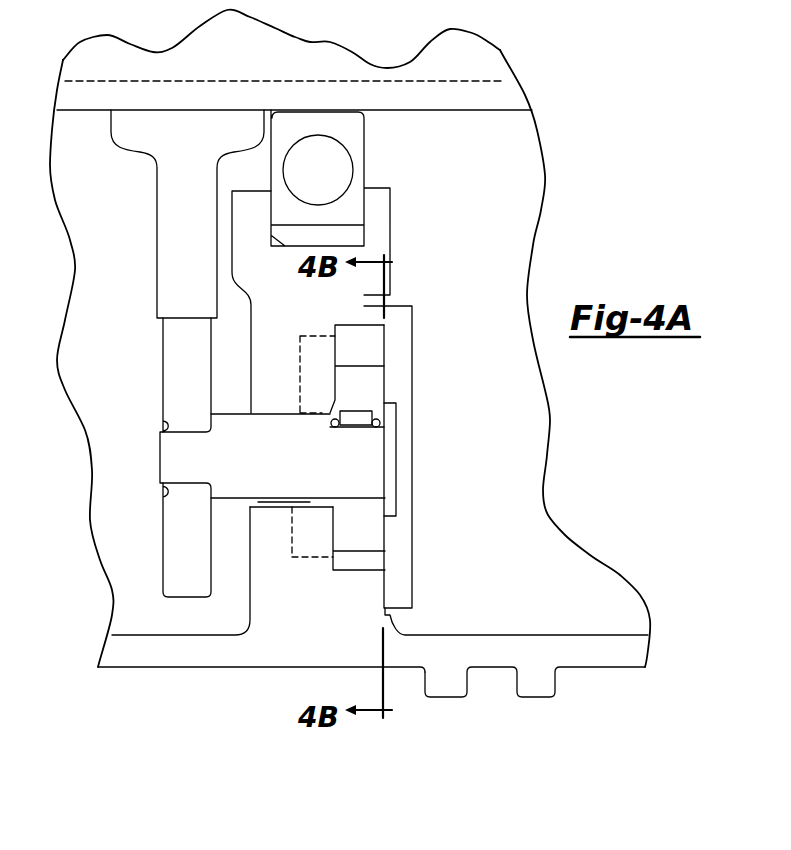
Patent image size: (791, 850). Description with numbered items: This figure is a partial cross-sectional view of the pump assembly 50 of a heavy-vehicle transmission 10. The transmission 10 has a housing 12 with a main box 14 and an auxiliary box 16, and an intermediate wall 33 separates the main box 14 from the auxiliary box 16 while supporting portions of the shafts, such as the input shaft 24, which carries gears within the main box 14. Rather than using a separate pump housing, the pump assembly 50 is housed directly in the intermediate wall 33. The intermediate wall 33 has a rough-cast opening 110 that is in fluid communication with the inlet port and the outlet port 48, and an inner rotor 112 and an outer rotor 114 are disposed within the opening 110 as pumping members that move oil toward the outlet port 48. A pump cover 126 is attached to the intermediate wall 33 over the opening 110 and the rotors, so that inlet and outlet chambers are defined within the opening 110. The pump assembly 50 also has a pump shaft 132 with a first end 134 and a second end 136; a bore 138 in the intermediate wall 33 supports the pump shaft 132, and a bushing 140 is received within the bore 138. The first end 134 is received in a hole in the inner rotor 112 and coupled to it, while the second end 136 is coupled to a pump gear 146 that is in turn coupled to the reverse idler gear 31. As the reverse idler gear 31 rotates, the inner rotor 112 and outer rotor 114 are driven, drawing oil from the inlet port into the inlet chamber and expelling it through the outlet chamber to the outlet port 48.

The transmission 10 is at (558, 228).
The housing 12 is at (588, 262).
The main box 14 is at (176, 672).
The auxiliary box 16 is at (600, 674).
The input shaft 24 is at (490, 98).
The reverse idler gear 31 is at (172, 222).
The intermediate wall 33 is at (262, 594).
The outlet port 48 is at (312, 557).
The pump assembly 50 is at (447, 281).
The opening 110 is at (360, 325).
The inner rotor 112 is at (375, 387).
The outer rotor 114 is at (378, 350).
The pump cover 126 is at (400, 543).
The pump shaft 132 is at (228, 420).
The first end 134 is at (368, 466).
The second end 136 is at (173, 466).
The bore 138 is at (273, 499).
The bushing 140 is at (250, 415).
The pump gear 146 is at (178, 350).